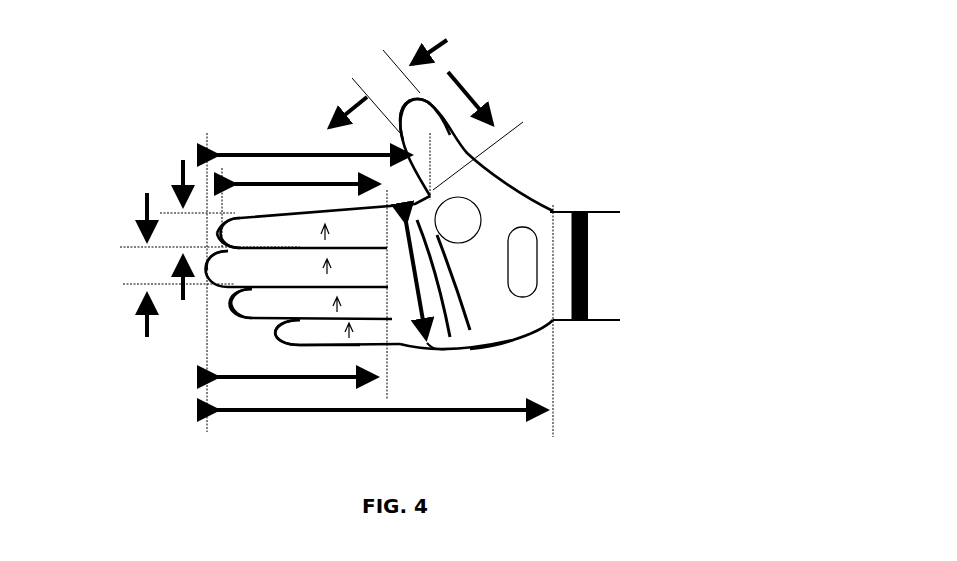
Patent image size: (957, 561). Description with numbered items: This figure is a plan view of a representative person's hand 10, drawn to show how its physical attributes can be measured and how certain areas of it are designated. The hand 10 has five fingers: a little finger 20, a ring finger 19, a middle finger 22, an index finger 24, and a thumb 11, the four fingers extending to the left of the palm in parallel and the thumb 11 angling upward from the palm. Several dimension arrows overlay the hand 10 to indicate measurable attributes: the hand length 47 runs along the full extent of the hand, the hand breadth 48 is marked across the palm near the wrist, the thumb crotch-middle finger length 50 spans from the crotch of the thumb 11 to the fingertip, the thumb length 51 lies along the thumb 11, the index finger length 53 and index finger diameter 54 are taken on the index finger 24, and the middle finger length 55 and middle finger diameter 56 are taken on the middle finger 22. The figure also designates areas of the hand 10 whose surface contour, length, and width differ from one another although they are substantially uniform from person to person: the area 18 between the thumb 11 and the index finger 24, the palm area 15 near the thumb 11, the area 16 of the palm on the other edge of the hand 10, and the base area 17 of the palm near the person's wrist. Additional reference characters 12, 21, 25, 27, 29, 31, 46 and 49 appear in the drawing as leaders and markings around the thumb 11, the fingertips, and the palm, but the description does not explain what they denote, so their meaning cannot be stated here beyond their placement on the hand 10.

The hand 10 is at (303, 52).
The thumb 11 is at (417, 137).
The thumb tip 12 is at (395, 105).
The palm area 15 is at (480, 245).
The area of the palm on the other edge of the hand 16 is at (493, 333).
The base of the palm area 17 is at (557, 328).
The area between the thumb and the index finger 18 is at (447, 220).
The ring finger 19 is at (244, 320).
The little finger 20 is at (330, 345).
The finger portion 21 is at (255, 330).
The middle finger 22 is at (232, 300).
The index finger 24 is at (225, 218).
The palm crease 25 is at (442, 348).
The finger portion 27 is at (236, 306).
The middle finger portion 29 is at (237, 292).
The index finger tip 31 is at (227, 232).
The palm width dimension 46 is at (409, 280).
The hand length 47 is at (381, 418).
The hand breadth 48 is at (588, 266).
The thumb length dimension 49 is at (388, 86).
The thumb crotch-middle finger length 50 is at (318, 282).
The thumb length 51 is at (478, 131).
The index finger length 53 is at (304, 284).
The index finger diameter 54 is at (210, 230).
The middle finger length 55 is at (296, 368).
The middle finger diameter 56 is at (179, 265).